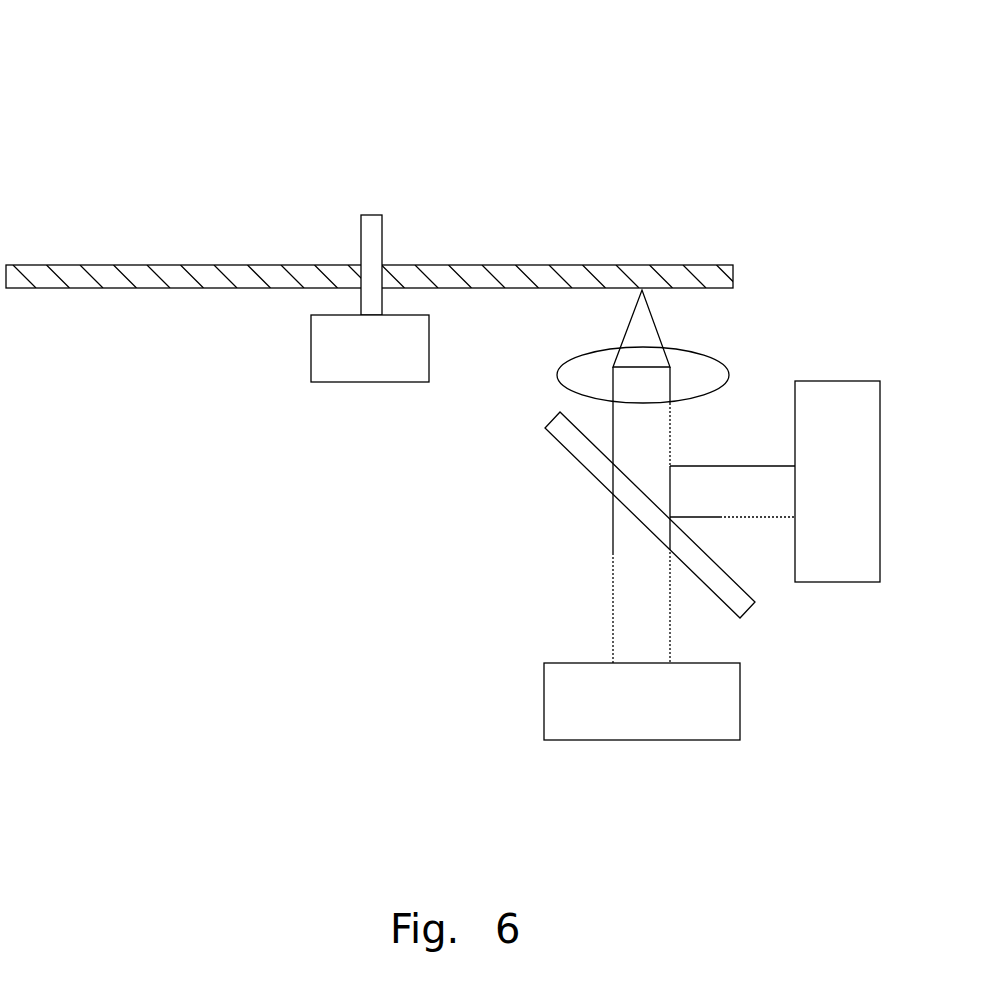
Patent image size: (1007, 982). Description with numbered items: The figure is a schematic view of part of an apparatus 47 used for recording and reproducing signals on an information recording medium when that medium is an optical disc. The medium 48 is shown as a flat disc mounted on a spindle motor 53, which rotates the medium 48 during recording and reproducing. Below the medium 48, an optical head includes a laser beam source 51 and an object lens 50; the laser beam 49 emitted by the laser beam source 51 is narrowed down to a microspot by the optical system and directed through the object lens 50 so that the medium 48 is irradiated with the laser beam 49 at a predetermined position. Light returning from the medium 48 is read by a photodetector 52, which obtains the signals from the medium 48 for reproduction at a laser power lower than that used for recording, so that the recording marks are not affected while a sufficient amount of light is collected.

The apparatus 47 is at (57, 89).
The medium 48 is at (82, 289).
The laser beam 49 is at (630, 317).
The object lens 50 is at (727, 367).
The laser beam source 51 is at (858, 570).
The photodetector 52 is at (552, 707).
The spindle motor 53 is at (322, 355).